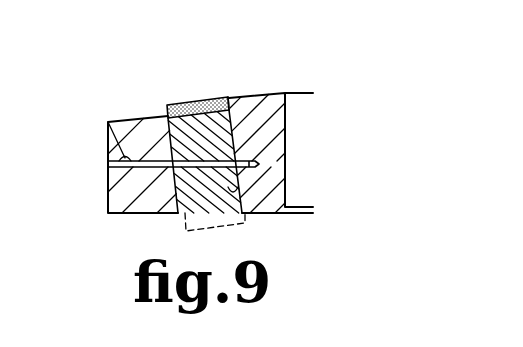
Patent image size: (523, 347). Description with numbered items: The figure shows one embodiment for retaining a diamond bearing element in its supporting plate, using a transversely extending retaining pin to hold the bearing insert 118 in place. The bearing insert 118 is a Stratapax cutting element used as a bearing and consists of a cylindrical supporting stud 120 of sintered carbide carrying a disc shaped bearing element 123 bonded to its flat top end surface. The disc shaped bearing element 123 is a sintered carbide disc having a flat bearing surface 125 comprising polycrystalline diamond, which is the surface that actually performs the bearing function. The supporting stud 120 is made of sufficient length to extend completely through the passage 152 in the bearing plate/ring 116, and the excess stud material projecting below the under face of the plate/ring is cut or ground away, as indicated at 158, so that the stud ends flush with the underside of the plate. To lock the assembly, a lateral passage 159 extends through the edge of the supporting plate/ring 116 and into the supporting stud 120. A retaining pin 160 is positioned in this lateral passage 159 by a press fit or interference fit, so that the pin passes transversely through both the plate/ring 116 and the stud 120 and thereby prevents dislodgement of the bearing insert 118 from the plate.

The bearing plate/ring 116 is at (108, 189).
The bearing insert 118 is at (172, 91).
The supporting stud 120 is at (222, 136).
The disc shaped bearing element 123 is at (231, 98).
The bearing surface 125 is at (198, 101).
The passage 152 is at (238, 190).
The cut or ground away excess material 158 is at (184, 231).
The lateral passage 159 is at (108, 122).
The retaining pin 160 is at (108, 164).